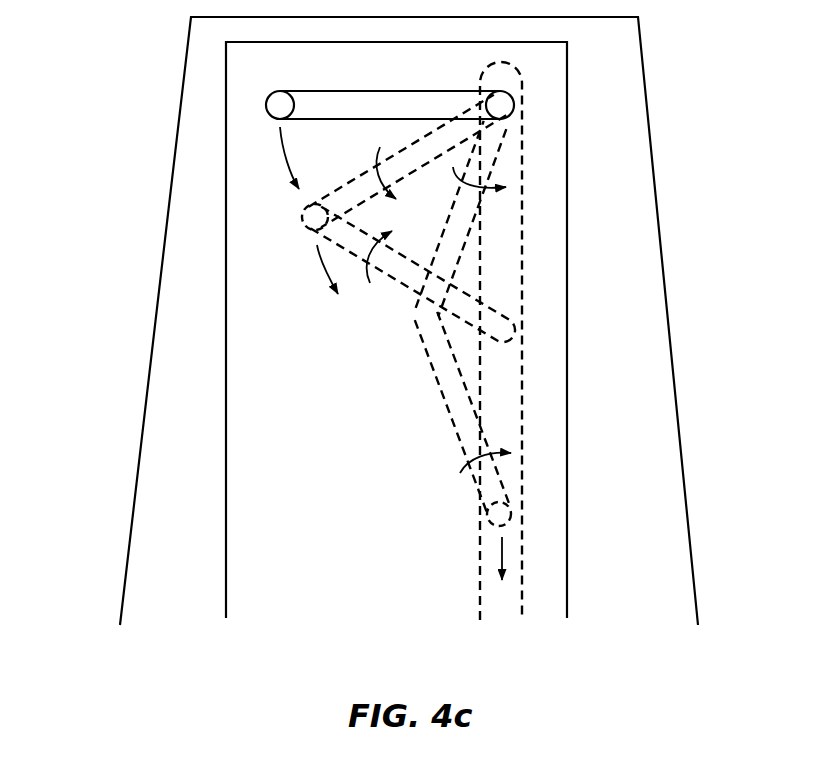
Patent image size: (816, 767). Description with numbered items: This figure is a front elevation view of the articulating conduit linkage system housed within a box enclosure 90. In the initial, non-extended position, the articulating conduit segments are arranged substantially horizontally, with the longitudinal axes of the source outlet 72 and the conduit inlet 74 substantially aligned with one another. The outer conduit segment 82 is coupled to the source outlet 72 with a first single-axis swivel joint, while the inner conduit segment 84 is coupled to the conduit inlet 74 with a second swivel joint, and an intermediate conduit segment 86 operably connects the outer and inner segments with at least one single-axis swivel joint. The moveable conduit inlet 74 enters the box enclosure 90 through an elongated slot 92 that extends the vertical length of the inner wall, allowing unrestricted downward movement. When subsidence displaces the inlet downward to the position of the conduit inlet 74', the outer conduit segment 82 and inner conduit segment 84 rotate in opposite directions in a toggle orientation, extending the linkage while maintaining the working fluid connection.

The source outlet 72 is at (518, 78).
The conduit inlet 74 is at (390, 105).
The conduit inlet in displaced position 74' is at (639, 542).
The outer conduit segment 82 is at (468, 237).
The inner conduit segment 84 is at (443, 413).
The intermediate conduit segment 86 is at (302, 222).
The box enclosure 90 is at (226, 334).
The elongated slot 92 is at (522, 376).